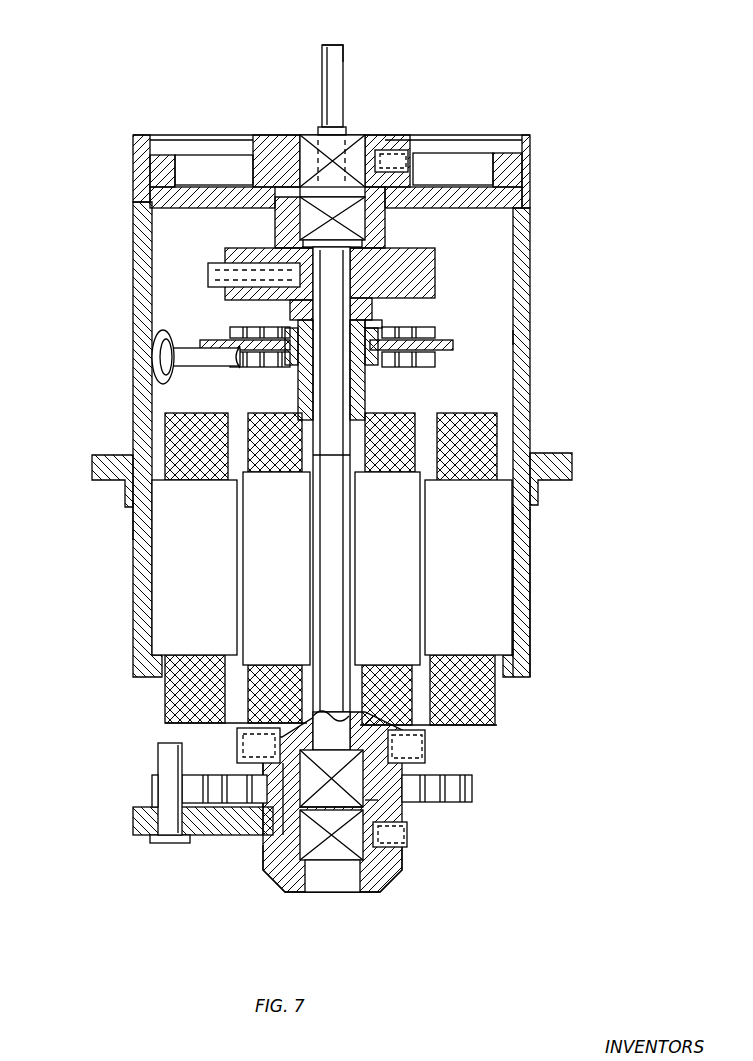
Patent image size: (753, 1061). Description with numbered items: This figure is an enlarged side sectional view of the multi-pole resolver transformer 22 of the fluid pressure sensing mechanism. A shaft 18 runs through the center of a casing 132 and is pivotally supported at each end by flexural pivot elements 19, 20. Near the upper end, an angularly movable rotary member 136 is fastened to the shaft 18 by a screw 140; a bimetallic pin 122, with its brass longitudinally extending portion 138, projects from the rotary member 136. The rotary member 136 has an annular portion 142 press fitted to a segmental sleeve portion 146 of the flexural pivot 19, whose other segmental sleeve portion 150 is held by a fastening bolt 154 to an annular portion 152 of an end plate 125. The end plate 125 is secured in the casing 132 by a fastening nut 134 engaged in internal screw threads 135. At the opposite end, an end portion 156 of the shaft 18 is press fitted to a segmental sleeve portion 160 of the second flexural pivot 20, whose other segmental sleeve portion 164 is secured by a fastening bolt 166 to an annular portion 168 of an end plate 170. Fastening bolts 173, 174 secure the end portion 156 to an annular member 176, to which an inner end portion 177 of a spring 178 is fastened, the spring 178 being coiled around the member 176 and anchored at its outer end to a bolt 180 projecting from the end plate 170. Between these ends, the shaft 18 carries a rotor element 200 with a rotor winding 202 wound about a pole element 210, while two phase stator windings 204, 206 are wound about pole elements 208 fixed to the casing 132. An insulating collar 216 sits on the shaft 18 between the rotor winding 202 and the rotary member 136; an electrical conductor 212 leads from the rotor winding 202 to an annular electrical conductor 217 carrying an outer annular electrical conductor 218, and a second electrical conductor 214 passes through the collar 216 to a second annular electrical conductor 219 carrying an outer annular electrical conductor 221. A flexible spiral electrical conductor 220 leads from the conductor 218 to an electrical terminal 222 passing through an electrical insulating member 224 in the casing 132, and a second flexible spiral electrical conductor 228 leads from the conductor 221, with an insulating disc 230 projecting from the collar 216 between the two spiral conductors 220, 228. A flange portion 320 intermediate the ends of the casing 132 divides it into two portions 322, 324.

The shaft 18 is at (345, 598).
The flexural pivot element 19 is at (292, 190).
The flexural pivot element 20 is at (378, 806).
The multi-pole resolver transformer 22 is at (100, 527).
The pin 122 is at (345, 80).
The end plate 125 is at (522, 200).
The casing 132 is at (530, 275).
The fastening nut 134 is at (155, 160).
The internal screw threads 135 is at (535, 162).
The rotary member 136 is at (420, 264).
The longitudinally extending portion 138 is at (322, 65).
The screw 140 is at (215, 265).
The annular portion 142 is at (385, 236).
The segmental sleeve portion 146 is at (355, 210).
The segmental sleeve portion 150 is at (350, 140).
The annular portion 152 is at (283, 135).
The fastening bolt 154 is at (408, 152).
The end portion 156 is at (345, 720).
The segmental sleeve portion 160 is at (275, 830).
The segmental sleeve portion 164 is at (315, 872).
The fastening bolt 166 is at (410, 840).
The annular portion 168 is at (378, 880).
The end plate 170 is at (140, 820).
The fastening bolt 173 is at (428, 748).
The fastening bolt 174 is at (242, 748).
The annular member 176 is at (262, 772).
The inner end portion 177 is at (262, 790).
The spring 178 is at (474, 788).
The bolt 180 is at (162, 762).
The rotor element 200 is at (258, 590).
The rotor winding 202 is at (258, 413).
The stator winding 204 is at (175, 425).
The stator winding 206 is at (497, 420).
The pole element 208 is at (175, 556).
The pole element 210 is at (397, 528).
The electrical conductor 212 is at (305, 384).
The electrical conductor 214 is at (365, 392).
The collar 216 is at (372, 413).
The annular electrical conductor 217 is at (290, 360).
The outer annular electrical conductor 218 is at (375, 360).
The annular electrical conductor 219 is at (372, 330).
The flexible spiral electrical conductor 220 is at (250, 355).
The outer annular electrical conductor 221 is at (285, 326).
The electrical terminal 222 is at (188, 350).
The electrical insulating member 224 is at (152, 337).
The flexible spiral electrical conductor 228 is at (430, 328).
The disc 230 is at (455, 342).
The flange portion 320 is at (573, 467).
The casing portion 322 is at (548, 337).
The casing portion 324 is at (535, 537).